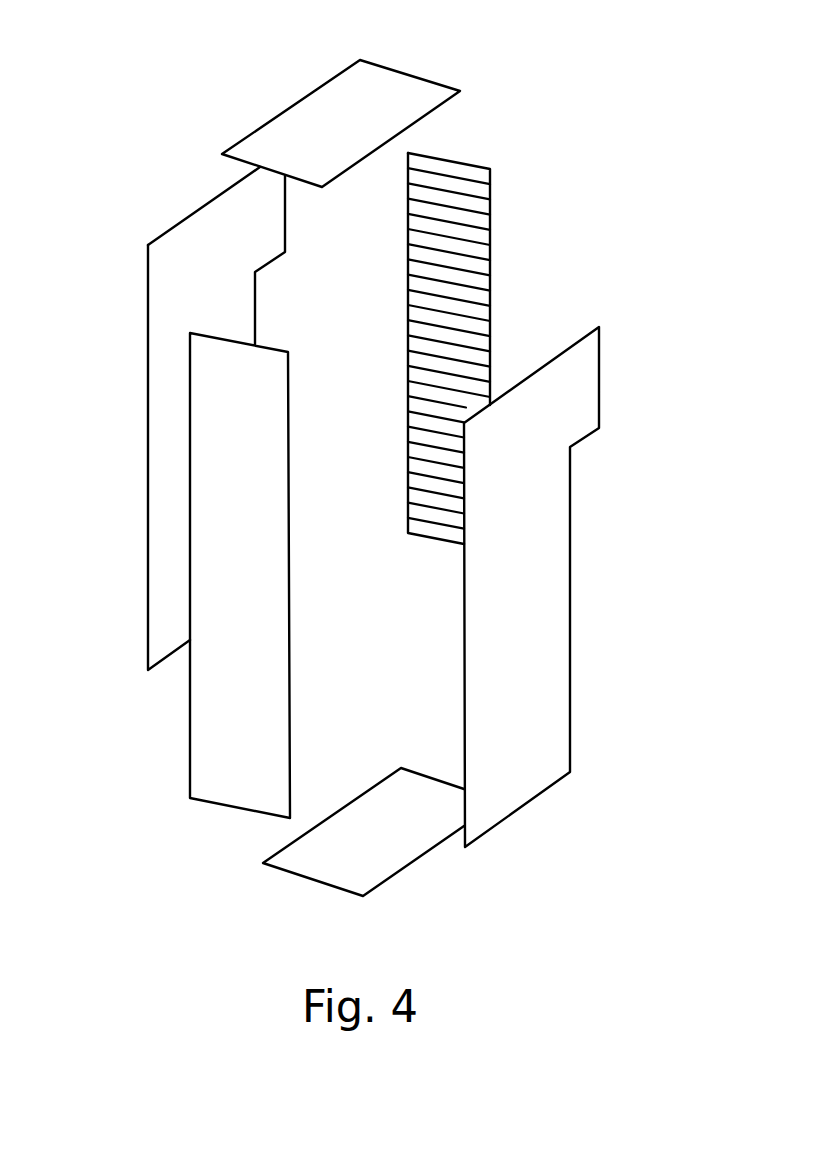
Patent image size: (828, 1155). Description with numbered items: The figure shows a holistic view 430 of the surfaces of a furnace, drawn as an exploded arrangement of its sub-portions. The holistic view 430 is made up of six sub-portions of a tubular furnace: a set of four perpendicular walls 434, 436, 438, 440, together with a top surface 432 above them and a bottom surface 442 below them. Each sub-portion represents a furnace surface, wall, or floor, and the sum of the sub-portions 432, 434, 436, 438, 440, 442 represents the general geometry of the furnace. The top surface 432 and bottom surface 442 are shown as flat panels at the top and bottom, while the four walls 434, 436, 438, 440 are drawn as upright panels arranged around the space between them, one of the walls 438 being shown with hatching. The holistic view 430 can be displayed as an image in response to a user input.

The holistic view 430 is at (173, 62).
The top surface 432 is at (273, 118).
The perpendicular wall 434 is at (148, 297).
The perpendicular wall 436 is at (290, 576).
The perpendicular wall 438 is at (490, 247).
The perpendicular wall 440 is at (570, 530).
The bottom surface 442 is at (387, 881).